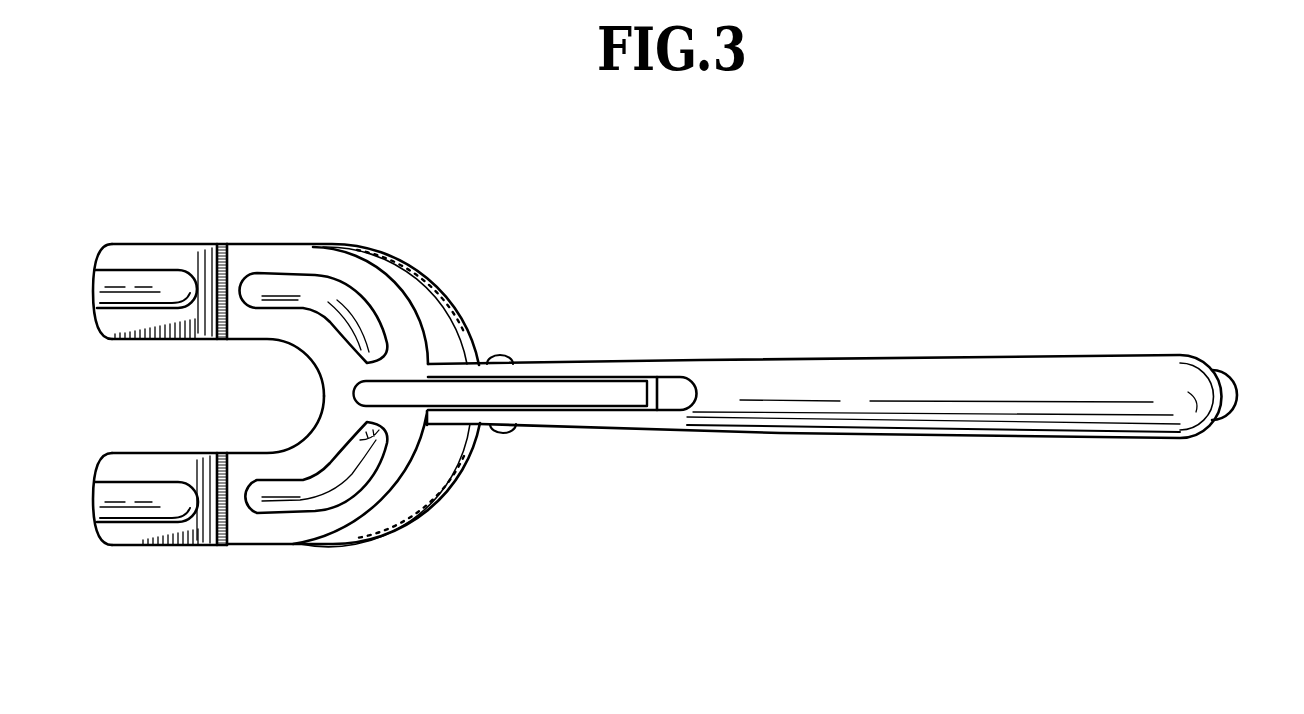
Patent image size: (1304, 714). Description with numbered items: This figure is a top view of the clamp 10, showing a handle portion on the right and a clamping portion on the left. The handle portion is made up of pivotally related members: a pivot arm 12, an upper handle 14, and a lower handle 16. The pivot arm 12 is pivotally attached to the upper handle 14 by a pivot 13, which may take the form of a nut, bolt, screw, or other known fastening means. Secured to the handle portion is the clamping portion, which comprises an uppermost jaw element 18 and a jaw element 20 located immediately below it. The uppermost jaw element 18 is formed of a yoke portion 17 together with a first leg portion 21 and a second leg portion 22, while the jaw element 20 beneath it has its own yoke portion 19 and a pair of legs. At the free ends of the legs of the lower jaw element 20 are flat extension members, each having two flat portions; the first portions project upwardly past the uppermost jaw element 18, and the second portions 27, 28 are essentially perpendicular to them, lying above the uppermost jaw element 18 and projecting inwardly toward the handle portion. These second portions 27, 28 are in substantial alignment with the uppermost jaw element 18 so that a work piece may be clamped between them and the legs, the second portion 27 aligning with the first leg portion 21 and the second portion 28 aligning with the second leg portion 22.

The clamp 10 is at (513, 310).
The pivot arm 12 is at (613, 390).
The pivot 13 is at (497, 353).
The upper handle 14 is at (937, 378).
The lower handle 16 is at (1227, 380).
The yoke portion 17 is at (363, 420).
The uppermost jaw element 18 is at (371, 486).
The yoke portion 19 is at (440, 430).
The jaw element 20 is at (467, 478).
The first leg portion 21 is at (270, 260).
The second leg portion 22 is at (287, 545).
The second portion 27 is at (158, 258).
The second portion 28 is at (170, 545).